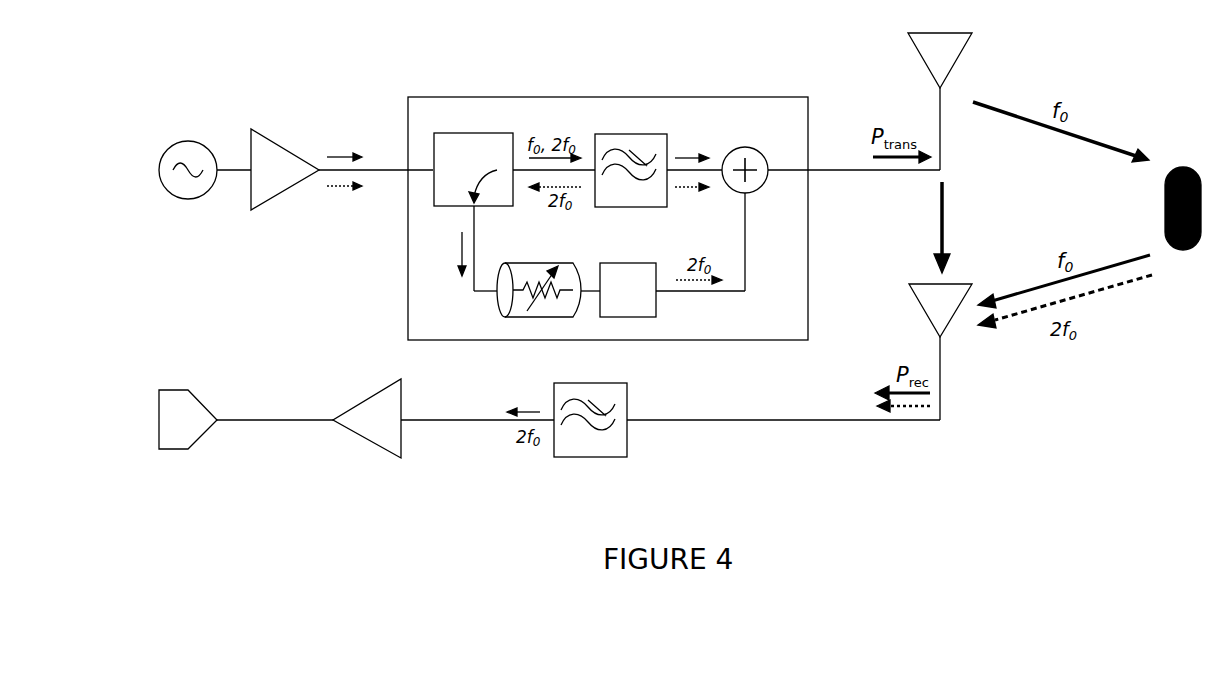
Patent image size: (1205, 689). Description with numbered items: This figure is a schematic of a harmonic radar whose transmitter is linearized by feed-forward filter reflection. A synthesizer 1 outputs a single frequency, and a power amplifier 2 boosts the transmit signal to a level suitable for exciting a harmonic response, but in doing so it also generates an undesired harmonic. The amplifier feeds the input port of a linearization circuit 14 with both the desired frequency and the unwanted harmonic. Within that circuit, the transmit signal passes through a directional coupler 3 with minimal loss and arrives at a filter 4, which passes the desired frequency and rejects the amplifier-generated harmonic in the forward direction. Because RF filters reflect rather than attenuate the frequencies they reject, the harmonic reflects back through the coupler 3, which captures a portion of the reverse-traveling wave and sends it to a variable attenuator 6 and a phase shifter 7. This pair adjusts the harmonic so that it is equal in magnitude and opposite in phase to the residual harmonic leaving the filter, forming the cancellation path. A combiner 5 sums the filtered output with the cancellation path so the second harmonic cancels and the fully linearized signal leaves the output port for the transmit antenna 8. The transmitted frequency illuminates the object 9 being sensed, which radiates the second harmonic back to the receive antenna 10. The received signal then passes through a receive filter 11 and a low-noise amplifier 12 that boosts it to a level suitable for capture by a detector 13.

The signal source (f0) 1 is at (171, 170).
The power amplifier (PA) 2 is at (285, 169).
The circulator 3 is at (473, 194).
The band-pass filter 4 is at (631, 170).
The power combiner / summer 5 is at (754, 172).
The variable attenuator 6 is at (539, 290).
The phase shifter 7 is at (628, 290).
The transmit antenna (Tx) 8 is at (940, 101).
The target 9 is at (1183, 208).
The receive antenna (Rx) 10 is at (940, 352).
The receive band-pass filter (2f0) 11 is at (619, 420).
The receive amplifier 12 is at (367, 418).
The detector 13 is at (170, 419).
The harmonic cancellation network (Port A / Port B) 14 is at (611, 218).